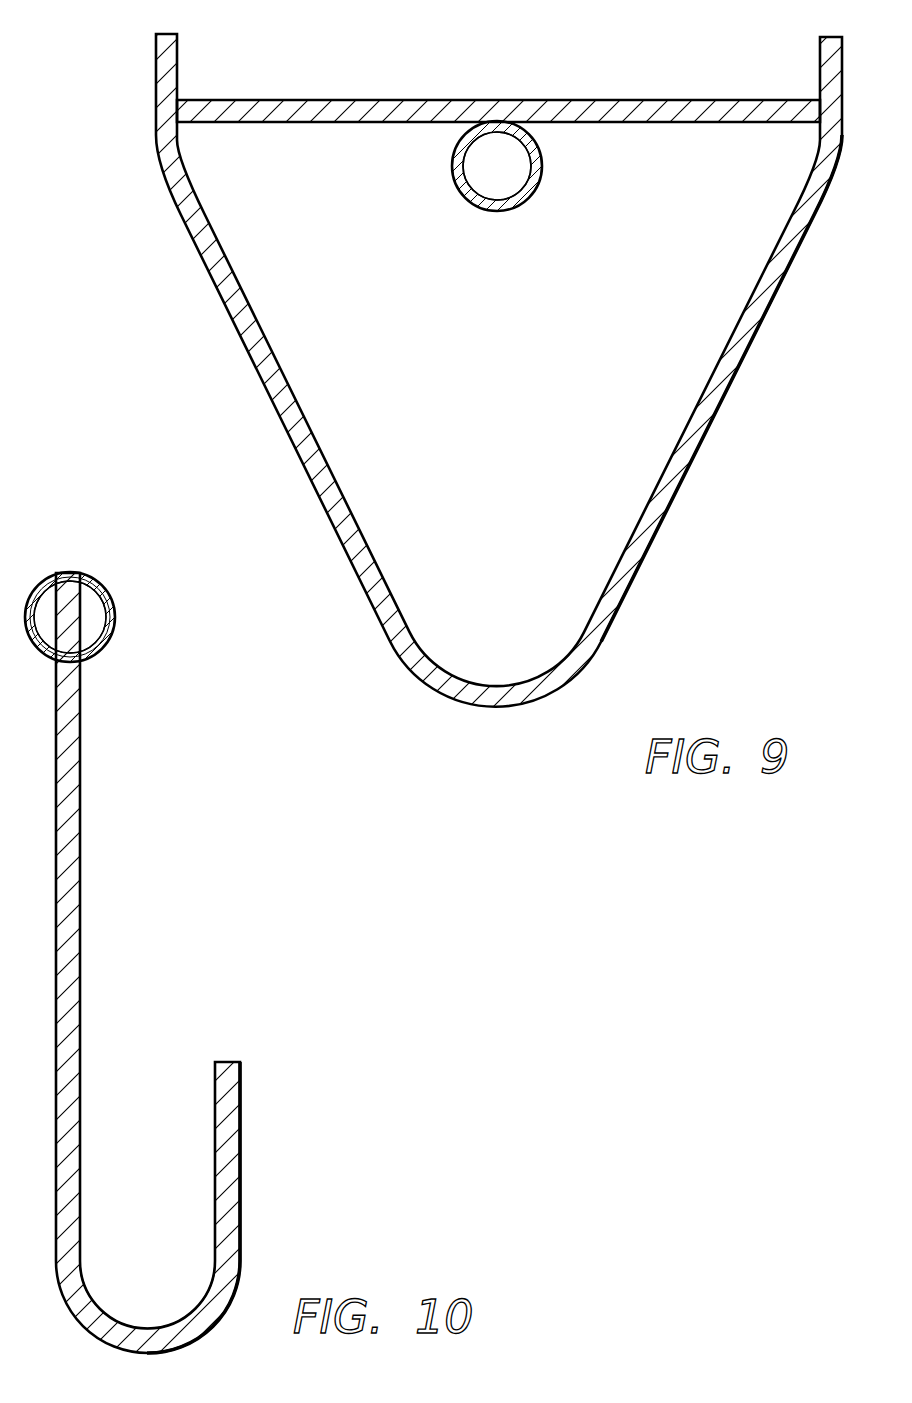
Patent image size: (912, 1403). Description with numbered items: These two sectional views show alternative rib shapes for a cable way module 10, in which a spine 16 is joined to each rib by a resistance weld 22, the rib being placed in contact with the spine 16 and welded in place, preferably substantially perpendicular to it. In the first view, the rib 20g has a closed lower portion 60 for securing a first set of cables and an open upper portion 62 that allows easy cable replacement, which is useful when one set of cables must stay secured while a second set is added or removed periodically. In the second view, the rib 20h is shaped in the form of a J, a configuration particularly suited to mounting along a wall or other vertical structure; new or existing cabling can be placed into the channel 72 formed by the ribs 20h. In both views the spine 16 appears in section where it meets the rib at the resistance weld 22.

In FIG. 9, the cable way module 10 is at (502, 354).
In FIG. 10, the cable way module 10 is at (160, 944).
In FIG. 9, the spine 16 is at (532, 195).
In FIG. 10, the spine 16 is at (115, 612).
In FIG. 9, the resistance weld 22 is at (465, 124).
In FIG. 10, the resistance weld 22 is at (60, 662).
In FIG. 9, the closed lower portion 60 is at (659, 328).
In FIG. 9, the open upper portion 62 is at (717, 56).
In FIG. 9, the rib 20g is at (654, 616).
In FIG. 10, the rib 20h is at (80, 915).
In FIG. 10, the channel 72 is at (148, 1272).